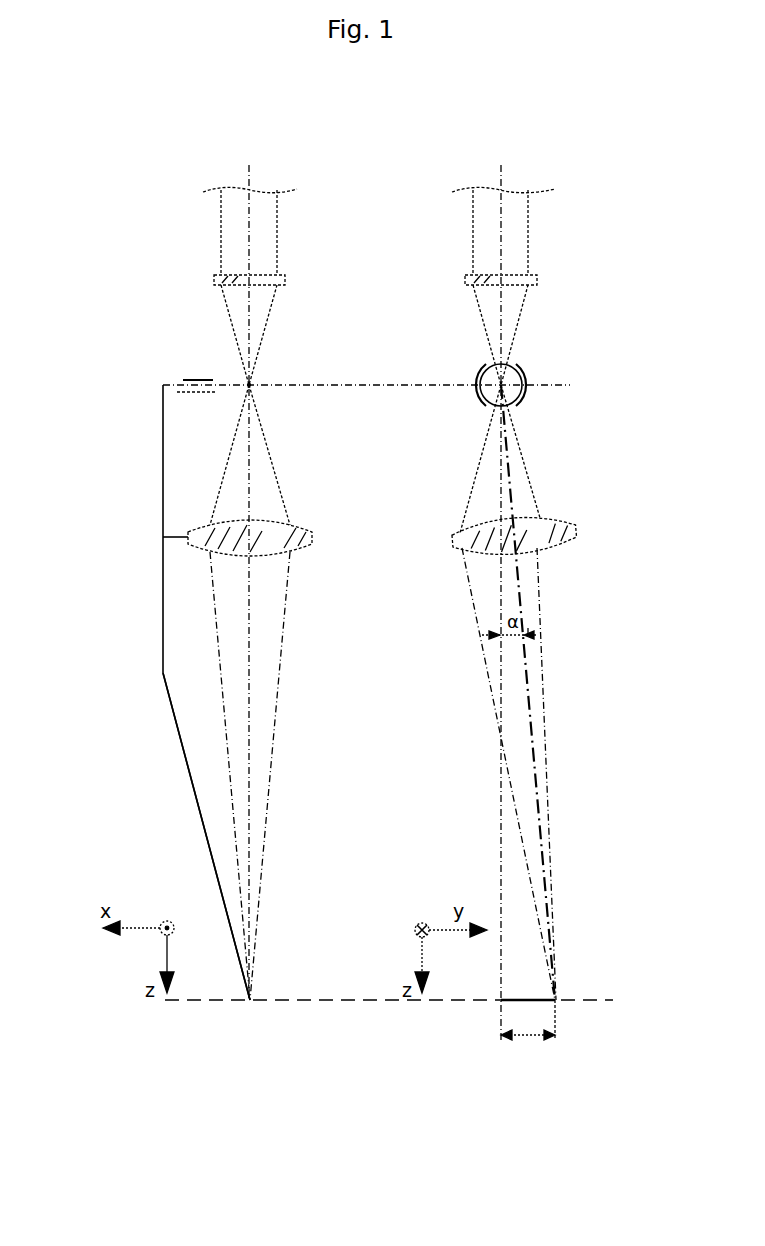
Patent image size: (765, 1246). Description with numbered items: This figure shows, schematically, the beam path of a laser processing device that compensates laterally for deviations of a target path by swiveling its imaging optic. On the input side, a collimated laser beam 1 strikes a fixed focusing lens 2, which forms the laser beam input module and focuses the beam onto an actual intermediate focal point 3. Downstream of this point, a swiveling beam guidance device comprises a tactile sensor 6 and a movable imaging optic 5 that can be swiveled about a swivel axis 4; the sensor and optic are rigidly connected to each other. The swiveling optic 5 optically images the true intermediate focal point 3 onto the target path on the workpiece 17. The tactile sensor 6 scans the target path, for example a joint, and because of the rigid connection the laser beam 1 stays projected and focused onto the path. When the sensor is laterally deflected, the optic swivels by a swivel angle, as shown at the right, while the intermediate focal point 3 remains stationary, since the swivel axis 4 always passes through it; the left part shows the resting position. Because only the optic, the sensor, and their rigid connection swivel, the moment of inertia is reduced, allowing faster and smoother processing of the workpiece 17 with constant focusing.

The collimated laser beam 1 is at (233, 260).
The fixed focusing lens 2 is at (216, 278).
The actual intermediate focal point 3 is at (249, 385).
The swivel axis 4 is at (183, 380).
The movable imaging optic 5 is at (210, 533).
The tactile sensor 6 is at (233, 948).
The workpiece surface 17 is at (580, 1000).